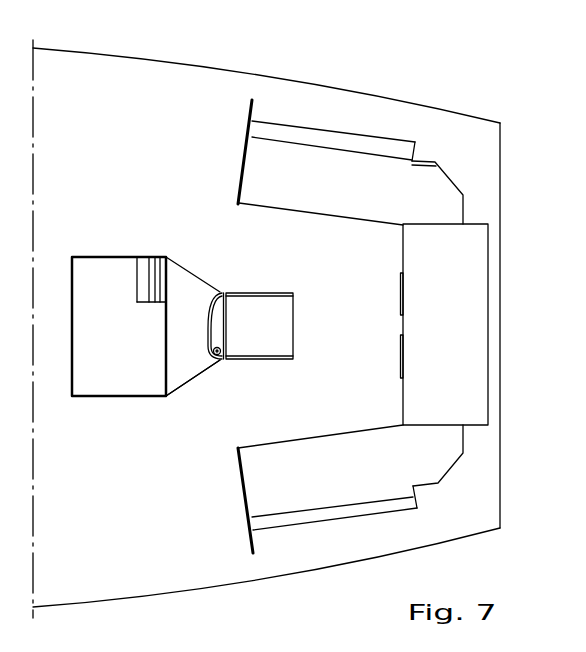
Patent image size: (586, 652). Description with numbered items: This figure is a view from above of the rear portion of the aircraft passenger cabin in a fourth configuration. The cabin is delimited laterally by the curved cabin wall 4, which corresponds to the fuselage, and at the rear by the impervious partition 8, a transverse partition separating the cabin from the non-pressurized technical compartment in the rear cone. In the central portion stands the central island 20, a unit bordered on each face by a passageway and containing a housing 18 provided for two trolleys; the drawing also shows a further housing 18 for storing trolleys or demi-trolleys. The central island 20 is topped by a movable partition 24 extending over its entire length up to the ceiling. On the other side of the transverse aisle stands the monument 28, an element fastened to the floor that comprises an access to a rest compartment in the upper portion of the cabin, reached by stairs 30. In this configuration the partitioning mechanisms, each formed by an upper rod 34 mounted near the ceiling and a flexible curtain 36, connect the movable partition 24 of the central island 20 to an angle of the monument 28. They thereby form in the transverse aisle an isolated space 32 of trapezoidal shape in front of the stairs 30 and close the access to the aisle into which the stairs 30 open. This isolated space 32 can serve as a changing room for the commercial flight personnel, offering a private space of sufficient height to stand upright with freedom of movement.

The cabin wall 4 is at (330, 84).
The impervious partition 8 is at (502, 297).
The housing 18 is at (347, 208).
The central island 20 is at (293, 332).
The movable partition 24 is at (225, 320).
The monument 28 is at (120, 380).
The stairs 30 is at (140, 272).
The isolated space 32 is at (188, 297).
The upper rod 34 is at (187, 400).
The flexible curtain 36 is at (200, 378).